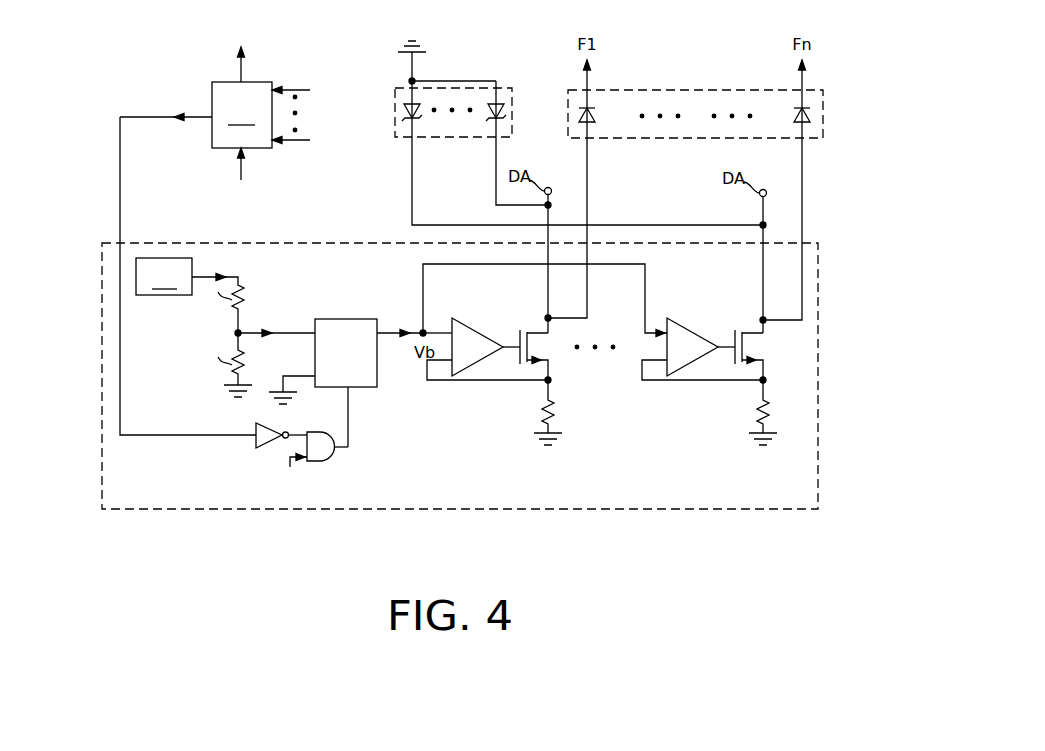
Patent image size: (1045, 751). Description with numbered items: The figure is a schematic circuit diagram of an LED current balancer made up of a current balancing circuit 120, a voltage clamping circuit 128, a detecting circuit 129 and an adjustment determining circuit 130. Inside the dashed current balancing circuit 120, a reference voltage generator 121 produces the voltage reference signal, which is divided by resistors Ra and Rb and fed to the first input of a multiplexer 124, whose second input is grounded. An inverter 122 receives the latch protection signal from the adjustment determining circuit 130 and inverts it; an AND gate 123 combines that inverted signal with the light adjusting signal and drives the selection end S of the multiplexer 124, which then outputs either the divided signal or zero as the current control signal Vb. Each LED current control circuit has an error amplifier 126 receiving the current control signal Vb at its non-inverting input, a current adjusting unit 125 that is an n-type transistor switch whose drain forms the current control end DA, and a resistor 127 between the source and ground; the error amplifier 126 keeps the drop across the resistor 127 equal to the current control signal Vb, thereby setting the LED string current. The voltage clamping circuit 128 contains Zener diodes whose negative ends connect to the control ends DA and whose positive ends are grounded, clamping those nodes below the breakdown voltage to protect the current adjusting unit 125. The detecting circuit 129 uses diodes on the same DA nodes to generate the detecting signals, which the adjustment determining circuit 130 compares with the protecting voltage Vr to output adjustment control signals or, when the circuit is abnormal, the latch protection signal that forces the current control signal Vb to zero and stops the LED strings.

The current balancing circuit 120 is at (778, 509).
The reference voltage generator 121 is at (194, 326).
The inverter 122 is at (259, 449).
The AND gate 123 is at (326, 455).
The multiplexer 124 is at (357, 320).
The current adjusting unit 125 is at (544, 356).
The error amplifier 126 is at (458, 321).
The resistor 127 is at (546, 421).
The voltage clamping circuit 128 is at (395, 98).
The detecting circuit 129 is at (688, 96).
The adjustment determining circuit 130 is at (229, 112).